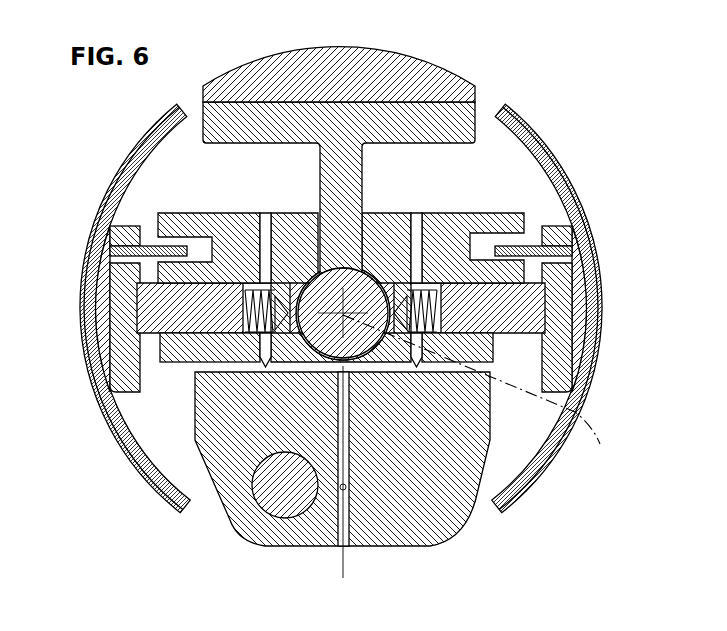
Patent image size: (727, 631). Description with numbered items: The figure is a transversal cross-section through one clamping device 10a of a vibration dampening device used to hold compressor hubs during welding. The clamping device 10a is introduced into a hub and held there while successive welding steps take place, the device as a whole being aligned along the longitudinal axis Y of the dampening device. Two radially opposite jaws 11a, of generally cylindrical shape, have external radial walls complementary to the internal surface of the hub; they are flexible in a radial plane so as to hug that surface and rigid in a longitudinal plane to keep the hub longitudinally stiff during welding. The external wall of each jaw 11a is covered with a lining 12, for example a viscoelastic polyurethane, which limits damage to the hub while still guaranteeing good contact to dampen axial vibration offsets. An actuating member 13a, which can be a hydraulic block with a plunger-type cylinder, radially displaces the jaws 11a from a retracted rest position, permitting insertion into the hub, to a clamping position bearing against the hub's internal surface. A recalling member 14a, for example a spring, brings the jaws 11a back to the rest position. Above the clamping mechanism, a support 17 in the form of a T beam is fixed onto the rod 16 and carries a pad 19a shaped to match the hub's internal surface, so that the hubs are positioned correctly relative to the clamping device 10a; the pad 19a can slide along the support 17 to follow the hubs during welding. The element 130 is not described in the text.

The clamping device 10a is at (356, 312).
The jaw 11a is at (92, 300).
The lining 12 is at (74, 316).
The actuating member 13a is at (398, 518).
The recalling member 14a is at (437, 307).
The rod 16 is at (345, 300).
The support 17 is at (256, 106).
The pad 19a is at (400, 74).
The center slot 130 is at (344, 486).
The longitudinal axis Y is at (473, 392).